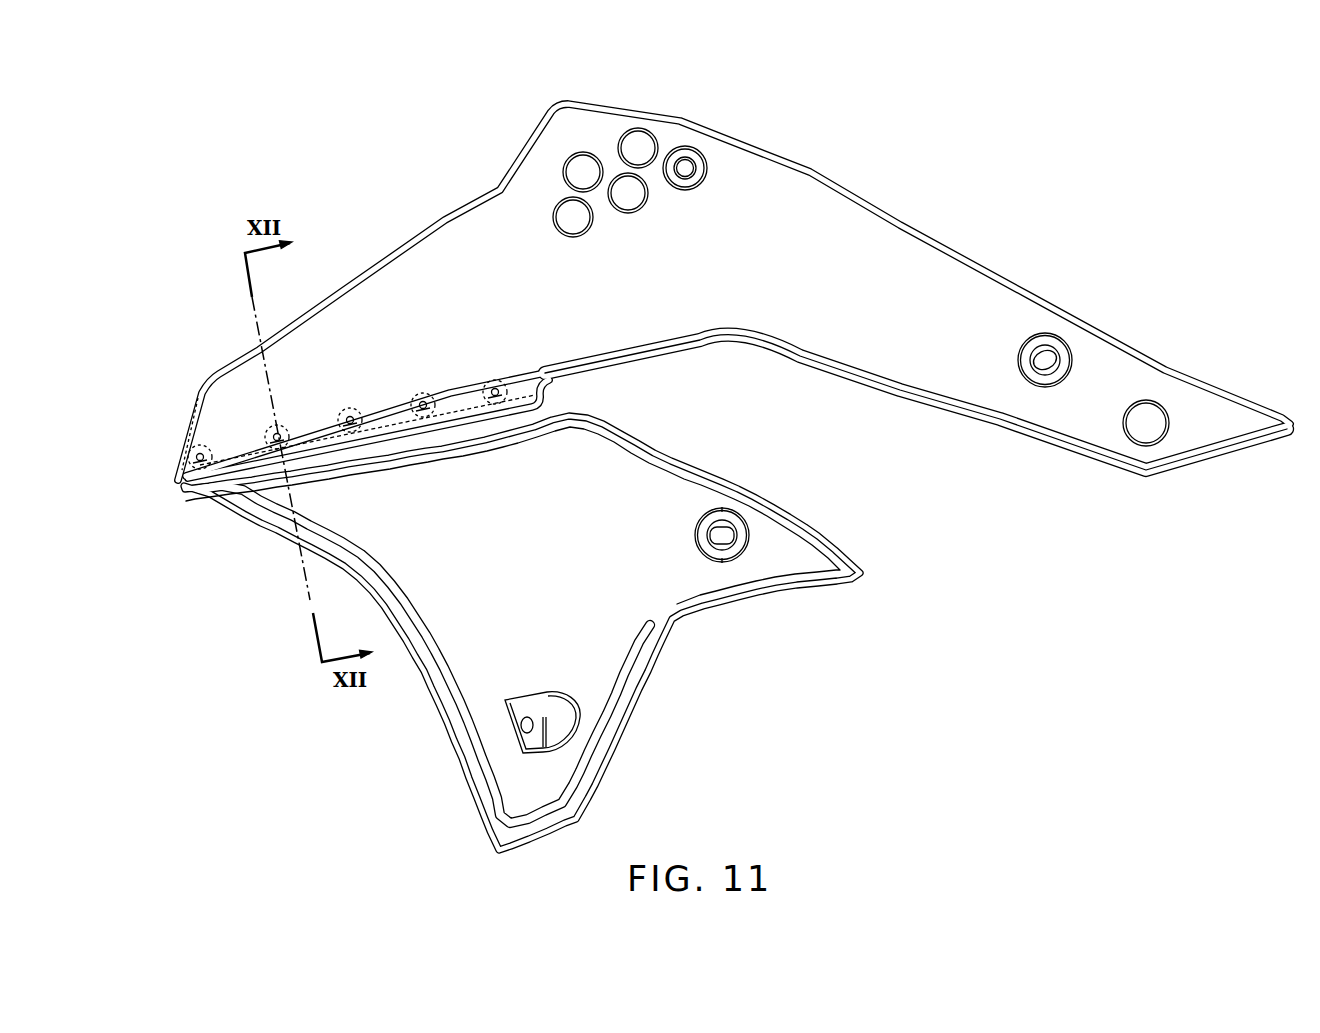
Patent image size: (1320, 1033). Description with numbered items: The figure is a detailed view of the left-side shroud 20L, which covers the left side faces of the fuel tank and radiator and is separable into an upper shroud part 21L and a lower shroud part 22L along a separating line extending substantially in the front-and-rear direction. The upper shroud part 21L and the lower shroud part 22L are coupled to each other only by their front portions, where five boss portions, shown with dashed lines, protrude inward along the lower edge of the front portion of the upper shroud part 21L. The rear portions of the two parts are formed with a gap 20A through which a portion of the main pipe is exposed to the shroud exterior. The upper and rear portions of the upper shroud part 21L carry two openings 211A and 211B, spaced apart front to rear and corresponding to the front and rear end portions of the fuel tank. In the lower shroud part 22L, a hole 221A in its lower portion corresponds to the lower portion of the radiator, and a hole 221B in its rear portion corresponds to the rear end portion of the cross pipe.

The left-side shroud 20L is at (734, 444).
The upper shroud part 21L is at (734, 259).
The lower shroud part 22L is at (538, 633).
The gap 20A is at (782, 441).
The opening 211A is at (690, 162).
The opening 211B is at (1050, 353).
The hole 221A is at (530, 728).
The hole 221B is at (733, 543).